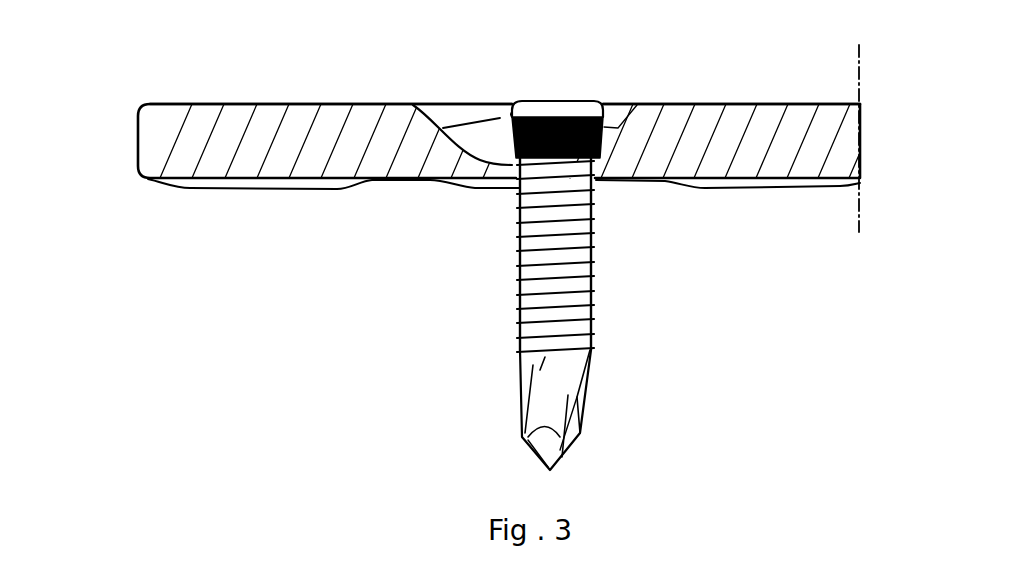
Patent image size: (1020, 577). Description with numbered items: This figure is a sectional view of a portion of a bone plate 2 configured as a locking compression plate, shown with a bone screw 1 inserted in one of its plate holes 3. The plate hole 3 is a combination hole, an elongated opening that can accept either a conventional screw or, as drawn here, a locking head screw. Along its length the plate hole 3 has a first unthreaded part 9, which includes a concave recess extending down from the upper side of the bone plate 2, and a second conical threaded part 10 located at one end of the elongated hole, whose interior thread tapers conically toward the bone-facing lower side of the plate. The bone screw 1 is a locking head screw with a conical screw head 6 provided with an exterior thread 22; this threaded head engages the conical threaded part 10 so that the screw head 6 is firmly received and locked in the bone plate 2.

The bone screw 1 is at (603, 250).
The bone plate 2 is at (233, 148).
The plate hole 3 is at (487, 99).
The screw head 6 is at (582, 107).
The first unthreaded part 9 is at (473, 137).
The second conical threaded part 10 is at (654, 101).
The exterior thread 22 is at (510, 110).